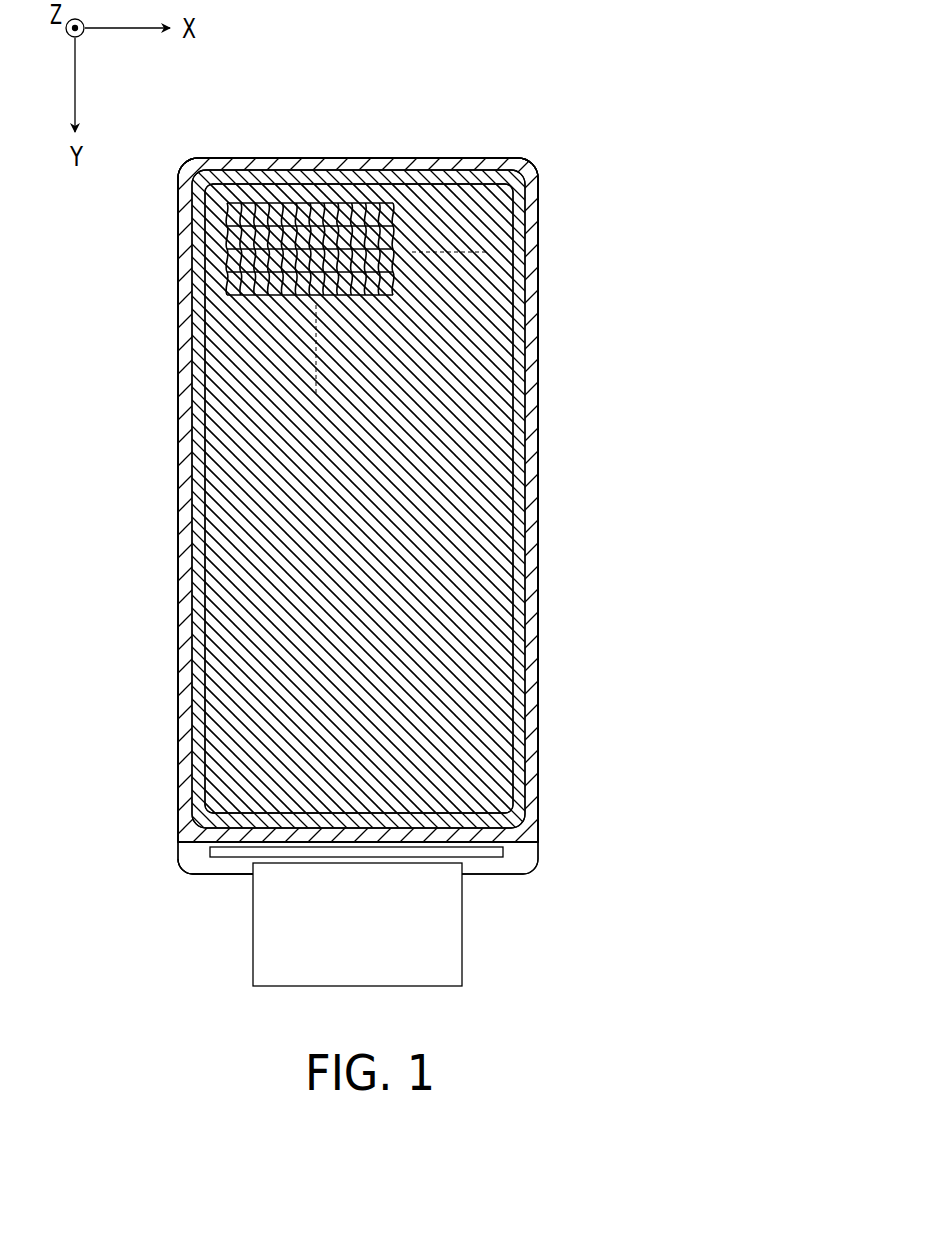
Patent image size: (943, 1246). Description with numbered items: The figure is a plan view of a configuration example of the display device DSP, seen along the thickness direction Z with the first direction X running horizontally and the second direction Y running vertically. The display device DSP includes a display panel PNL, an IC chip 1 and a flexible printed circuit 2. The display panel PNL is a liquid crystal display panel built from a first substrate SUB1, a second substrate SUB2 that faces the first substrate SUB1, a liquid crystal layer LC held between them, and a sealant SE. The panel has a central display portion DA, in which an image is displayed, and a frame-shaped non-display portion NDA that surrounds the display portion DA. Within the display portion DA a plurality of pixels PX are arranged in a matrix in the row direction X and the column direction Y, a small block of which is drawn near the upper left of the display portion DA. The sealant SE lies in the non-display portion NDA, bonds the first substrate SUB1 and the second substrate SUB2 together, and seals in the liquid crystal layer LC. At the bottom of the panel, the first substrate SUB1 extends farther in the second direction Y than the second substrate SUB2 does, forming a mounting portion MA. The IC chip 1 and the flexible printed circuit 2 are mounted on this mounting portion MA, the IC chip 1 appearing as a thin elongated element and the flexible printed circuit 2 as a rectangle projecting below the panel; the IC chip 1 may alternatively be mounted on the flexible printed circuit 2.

The display device DSP is at (627, 221).
The display panel PNL is at (538, 163).
The first substrate SUB1 is at (523, 861).
The second substrate SUB2 is at (522, 834).
The display portion DA is at (492, 423).
The non-display portion NDA is at (527, 523).
The sealant SE is at (200, 392).
The liquid crystal layer LC is at (222, 460).
The pixel PX is at (382, 217).
The mounting portion MA is at (201, 853).
The IC chip 1 is at (490, 861).
The flexible printed circuit 2 is at (462, 940).